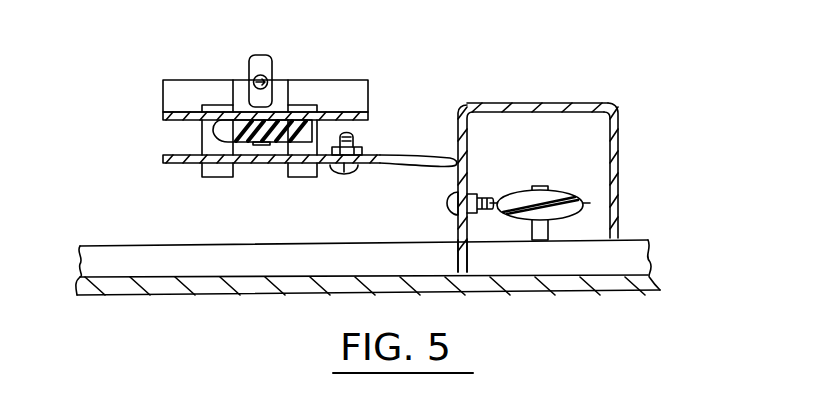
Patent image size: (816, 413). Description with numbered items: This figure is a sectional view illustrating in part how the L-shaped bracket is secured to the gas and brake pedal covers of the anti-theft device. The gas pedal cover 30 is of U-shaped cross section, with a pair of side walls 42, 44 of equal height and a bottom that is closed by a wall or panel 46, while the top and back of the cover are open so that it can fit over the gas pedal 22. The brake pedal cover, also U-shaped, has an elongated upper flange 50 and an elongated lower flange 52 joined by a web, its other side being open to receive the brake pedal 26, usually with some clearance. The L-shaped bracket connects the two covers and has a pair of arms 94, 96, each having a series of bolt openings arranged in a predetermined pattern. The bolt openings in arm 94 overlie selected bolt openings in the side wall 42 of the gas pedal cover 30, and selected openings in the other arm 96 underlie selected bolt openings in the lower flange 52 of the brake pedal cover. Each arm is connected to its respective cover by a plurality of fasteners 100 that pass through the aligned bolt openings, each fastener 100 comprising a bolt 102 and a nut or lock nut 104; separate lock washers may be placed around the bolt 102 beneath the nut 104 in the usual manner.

The gas pedal 22 is at (566, 203).
The brake pedal 26 is at (212, 129).
The gas pedal cover 30 is at (544, 149).
The side wall 42 is at (456, 112).
The side wall 44 is at (620, 128).
The bottom wall 46 is at (533, 103).
The upper flange 50 is at (178, 113).
The lower flange 52 is at (184, 163).
The arm 94 is at (452, 228).
The arm 96 is at (422, 167).
The fastener 100 is at (363, 141).
The bolt 102 is at (367, 138).
The nut 104 is at (345, 170).